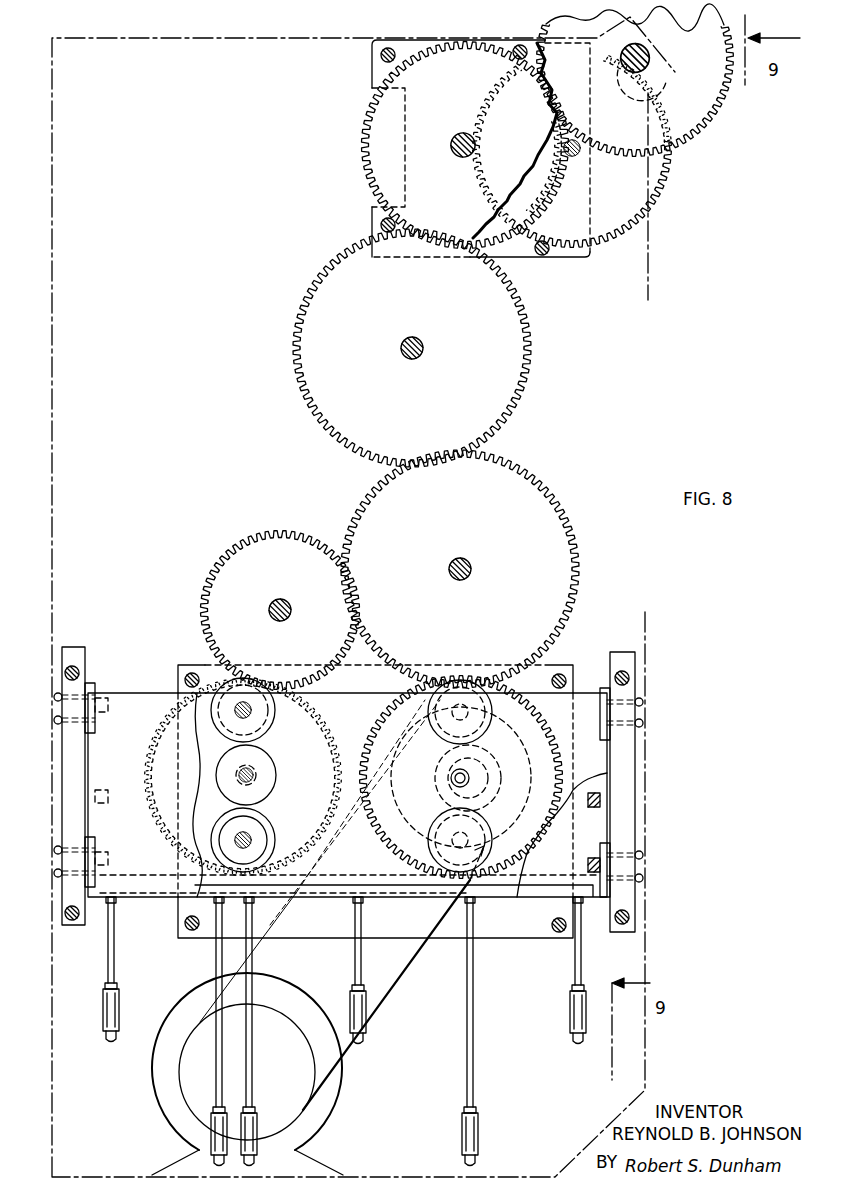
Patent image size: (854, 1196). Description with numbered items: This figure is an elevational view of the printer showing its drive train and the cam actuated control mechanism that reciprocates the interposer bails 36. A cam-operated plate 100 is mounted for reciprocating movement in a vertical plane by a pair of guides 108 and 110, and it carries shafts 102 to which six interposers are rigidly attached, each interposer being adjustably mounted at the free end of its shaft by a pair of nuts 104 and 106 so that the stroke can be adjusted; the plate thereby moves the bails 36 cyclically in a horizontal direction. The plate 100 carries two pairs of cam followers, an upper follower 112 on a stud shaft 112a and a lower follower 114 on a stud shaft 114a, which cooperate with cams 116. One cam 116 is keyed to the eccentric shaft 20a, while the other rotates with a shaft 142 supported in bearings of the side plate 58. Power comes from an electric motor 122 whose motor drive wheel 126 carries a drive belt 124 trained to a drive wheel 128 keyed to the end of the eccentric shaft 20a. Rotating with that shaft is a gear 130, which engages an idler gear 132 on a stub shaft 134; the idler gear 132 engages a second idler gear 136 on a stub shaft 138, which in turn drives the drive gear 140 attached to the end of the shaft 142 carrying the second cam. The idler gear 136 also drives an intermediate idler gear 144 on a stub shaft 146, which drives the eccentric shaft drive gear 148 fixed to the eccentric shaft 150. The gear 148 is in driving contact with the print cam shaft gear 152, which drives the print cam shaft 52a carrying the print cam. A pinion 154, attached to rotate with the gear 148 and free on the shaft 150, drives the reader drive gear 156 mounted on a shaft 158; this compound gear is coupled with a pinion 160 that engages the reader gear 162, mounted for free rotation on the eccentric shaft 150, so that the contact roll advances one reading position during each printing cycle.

The side plate 58 is at (604, 640).
The eccentric shaft drive gear 148 is at (453, 62).
The eccentric shaft 150 is at (455, 146).
The pinion 154 is at (474, 128).
The print cam shaft 52a is at (651, 60).
The print cam shaft gear 152 is at (706, 112).
The shaft 158 is at (582, 152).
The pinion 160 is at (548, 190).
The reader gear 162 is at (498, 224).
The reader drive gear 156 is at (600, 232).
The stub shaft 146 is at (423, 342).
The intermediate idler gear 144 is at (500, 357).
The second idler gear 136 is at (265, 552).
The stub shaft 138 is at (289, 600).
The stub shaft 134 is at (472, 572).
The idler gear 132 is at (549, 604).
The guide 108 is at (66, 647).
The guide 110 is at (628, 655).
The cam-operated plate 100 is at (157, 700).
The drive gear 140 is at (153, 740).
The upper cam follower 112 is at (477, 738).
The stud shaft 112a is at (252, 710).
The cam 116 is at (445, 789).
The shaft 142 is at (253, 777).
The lower cam follower 114 is at (478, 818).
The stud shaft 114a is at (251, 838).
The gear 130 is at (333, 737).
The eccentric shaft 20a is at (452, 773).
The drive wheel 128 is at (407, 830).
The drive belt 124 is at (350, 1042).
The electric motor 122 is at (338, 1090).
The motor drive wheel 126 is at (292, 1115).
The shaft 102 is at (474, 1072).
The nut 104 is at (476, 1108).
The interposer bail 36 is at (480, 1130).
The nut 106 is at (478, 1160).